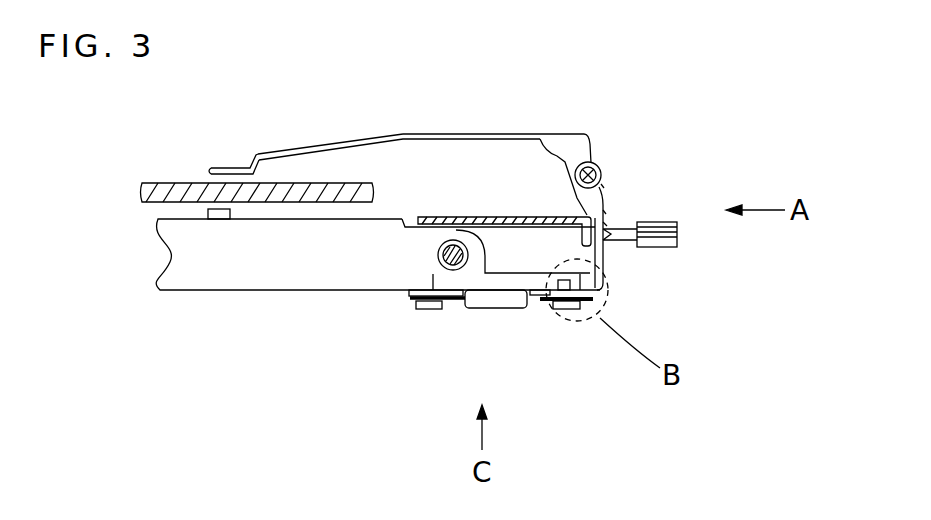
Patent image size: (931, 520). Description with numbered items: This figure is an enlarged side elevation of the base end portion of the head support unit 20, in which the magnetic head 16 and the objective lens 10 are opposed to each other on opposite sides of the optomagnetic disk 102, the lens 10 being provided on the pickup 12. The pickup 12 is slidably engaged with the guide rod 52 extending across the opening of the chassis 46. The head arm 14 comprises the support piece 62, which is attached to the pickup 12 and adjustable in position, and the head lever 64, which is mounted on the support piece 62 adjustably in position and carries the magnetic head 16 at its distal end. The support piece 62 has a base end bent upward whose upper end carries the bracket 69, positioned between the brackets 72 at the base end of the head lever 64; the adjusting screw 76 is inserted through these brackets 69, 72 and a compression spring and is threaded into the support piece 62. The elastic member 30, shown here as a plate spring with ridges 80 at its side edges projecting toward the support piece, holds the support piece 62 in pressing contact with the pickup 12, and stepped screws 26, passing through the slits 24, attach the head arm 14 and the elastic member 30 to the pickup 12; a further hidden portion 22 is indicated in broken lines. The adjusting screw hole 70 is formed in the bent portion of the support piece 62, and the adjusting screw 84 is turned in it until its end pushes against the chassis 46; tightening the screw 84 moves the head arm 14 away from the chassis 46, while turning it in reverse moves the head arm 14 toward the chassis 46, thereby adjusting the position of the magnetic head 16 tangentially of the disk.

The objective lens 10 is at (219, 219).
The pickup 12 is at (285, 268).
The head arm 14 is at (380, 386).
The magnetic head 16 is at (214, 181).
The head support unit 20 is at (120, 326).
The latch member 22 is at (427, 285).
The slits 24 is at (427, 290).
The stepped screws 26 is at (430, 310).
The elastic member 30 is at (537, 293).
The chassis 46 is at (540, 197).
The guide rod 52 is at (455, 240).
The support piece 62 is at (413, 291).
The head lever 64 is at (410, 135).
The bracket 69 is at (605, 218).
The adjusting screw hole 70 is at (608, 224).
The brackets 72 is at (574, 146).
The adjusting screw 76 is at (602, 200).
The ridges 80 is at (503, 300).
The adjusting screw 84 is at (677, 246).
The optomagnetic disk 102 is at (333, 186).